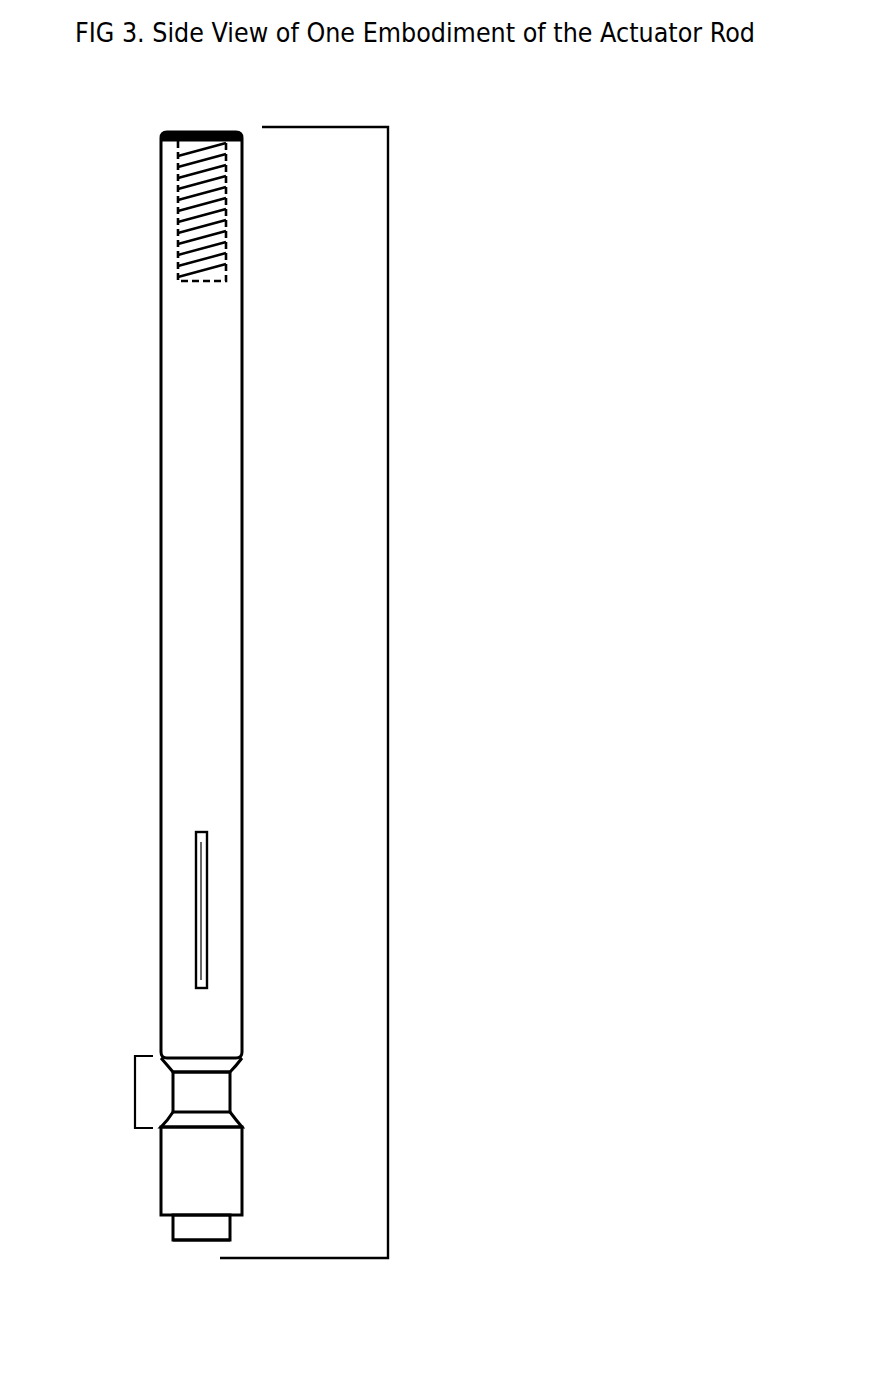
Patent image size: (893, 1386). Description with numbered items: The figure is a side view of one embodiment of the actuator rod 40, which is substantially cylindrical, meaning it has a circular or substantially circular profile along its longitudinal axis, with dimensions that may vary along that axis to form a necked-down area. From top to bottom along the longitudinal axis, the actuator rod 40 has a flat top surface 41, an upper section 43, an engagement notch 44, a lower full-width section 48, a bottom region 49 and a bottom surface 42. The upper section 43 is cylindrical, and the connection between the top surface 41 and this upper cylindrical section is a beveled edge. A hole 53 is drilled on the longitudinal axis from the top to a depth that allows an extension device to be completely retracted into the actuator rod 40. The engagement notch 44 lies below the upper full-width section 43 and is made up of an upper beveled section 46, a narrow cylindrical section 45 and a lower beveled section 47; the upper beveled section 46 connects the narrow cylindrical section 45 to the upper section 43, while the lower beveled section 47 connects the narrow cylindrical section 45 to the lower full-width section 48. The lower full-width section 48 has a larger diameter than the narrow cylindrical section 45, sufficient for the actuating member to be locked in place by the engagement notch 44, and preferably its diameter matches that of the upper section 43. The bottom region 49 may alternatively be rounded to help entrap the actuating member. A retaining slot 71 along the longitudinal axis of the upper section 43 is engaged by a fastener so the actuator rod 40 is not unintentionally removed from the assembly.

The actuator rod 40 is at (388, 732).
The flat top surface 41 is at (236, 130).
The bottom surface 42 is at (197, 1241).
The upper section 43 is at (225, 448).
The engagement notch 44 is at (119, 1092).
The narrow cylindrical section 45 is at (210, 1092).
The upper beveled section 46 is at (210, 1063).
The lower beveled section 47 is at (210, 1120).
The lower full-width section 48 is at (207, 1168).
The bottom region 49 is at (205, 1230).
The hole 53 is at (203, 207).
The retaining slot 71 is at (197, 912).